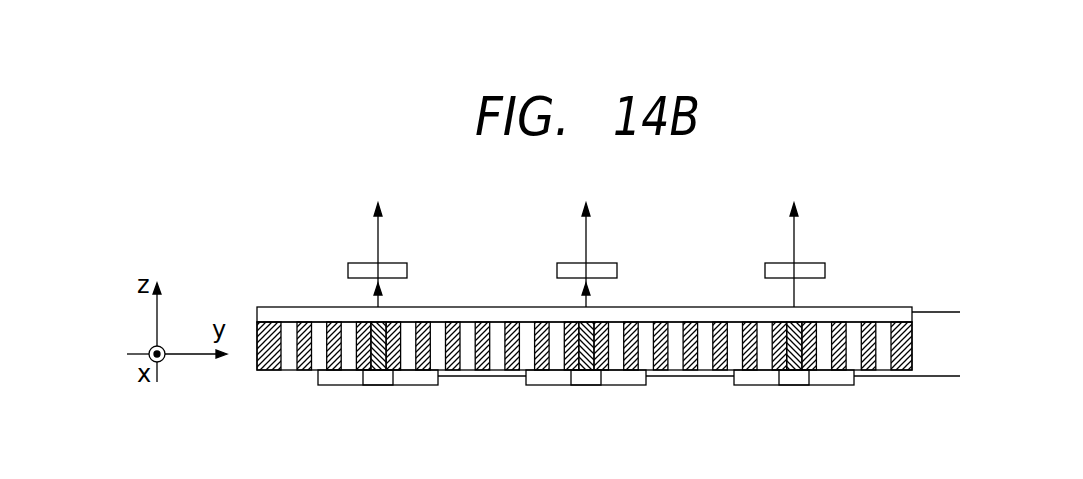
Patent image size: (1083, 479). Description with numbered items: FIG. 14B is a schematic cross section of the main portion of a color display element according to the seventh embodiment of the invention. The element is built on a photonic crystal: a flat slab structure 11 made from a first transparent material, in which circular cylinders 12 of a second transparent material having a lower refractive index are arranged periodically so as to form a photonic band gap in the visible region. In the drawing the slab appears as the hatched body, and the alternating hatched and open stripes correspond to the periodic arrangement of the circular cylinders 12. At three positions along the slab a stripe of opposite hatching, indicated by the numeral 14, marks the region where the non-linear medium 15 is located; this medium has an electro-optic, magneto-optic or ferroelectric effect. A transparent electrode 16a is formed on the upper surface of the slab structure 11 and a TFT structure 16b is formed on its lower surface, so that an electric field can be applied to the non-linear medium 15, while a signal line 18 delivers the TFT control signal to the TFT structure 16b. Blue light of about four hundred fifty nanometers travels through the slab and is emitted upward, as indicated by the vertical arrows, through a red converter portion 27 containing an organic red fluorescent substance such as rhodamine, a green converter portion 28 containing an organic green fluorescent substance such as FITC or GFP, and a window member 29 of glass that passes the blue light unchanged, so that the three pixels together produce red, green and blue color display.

The slab structure 11 is at (270, 324).
The circular cylinders 12 is at (290, 372).
The inverted domain region 14 is at (352, 315).
The non-linear medium 15 is at (377, 380).
The transparent electrode 16a is at (893, 310).
The TFT structure 16b is at (350, 380).
The signal line 18 is at (930, 377).
The converter portion 27 is at (398, 267).
The converter portion 28 is at (607, 267).
The window member 29 is at (813, 267).